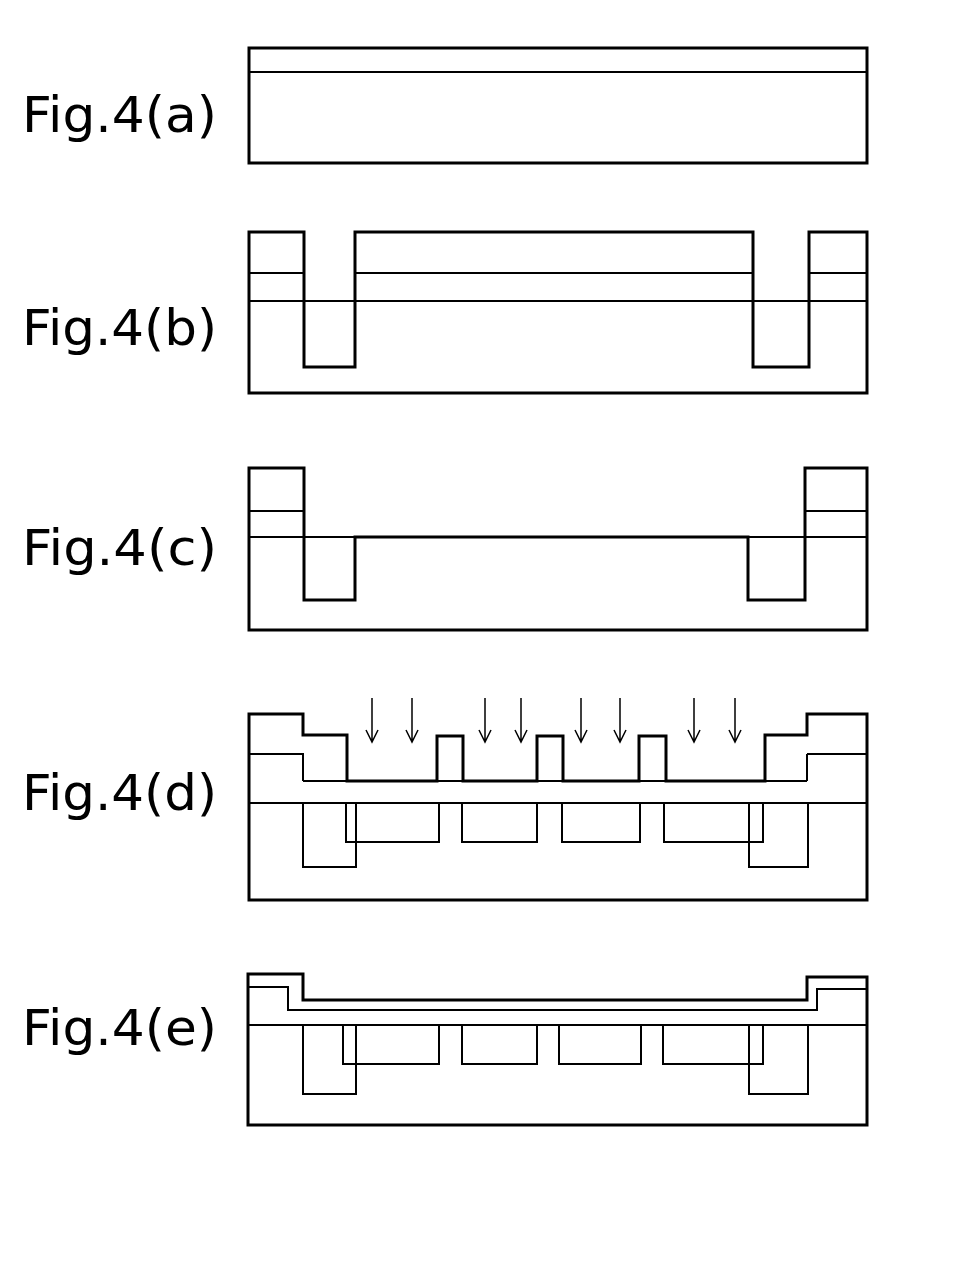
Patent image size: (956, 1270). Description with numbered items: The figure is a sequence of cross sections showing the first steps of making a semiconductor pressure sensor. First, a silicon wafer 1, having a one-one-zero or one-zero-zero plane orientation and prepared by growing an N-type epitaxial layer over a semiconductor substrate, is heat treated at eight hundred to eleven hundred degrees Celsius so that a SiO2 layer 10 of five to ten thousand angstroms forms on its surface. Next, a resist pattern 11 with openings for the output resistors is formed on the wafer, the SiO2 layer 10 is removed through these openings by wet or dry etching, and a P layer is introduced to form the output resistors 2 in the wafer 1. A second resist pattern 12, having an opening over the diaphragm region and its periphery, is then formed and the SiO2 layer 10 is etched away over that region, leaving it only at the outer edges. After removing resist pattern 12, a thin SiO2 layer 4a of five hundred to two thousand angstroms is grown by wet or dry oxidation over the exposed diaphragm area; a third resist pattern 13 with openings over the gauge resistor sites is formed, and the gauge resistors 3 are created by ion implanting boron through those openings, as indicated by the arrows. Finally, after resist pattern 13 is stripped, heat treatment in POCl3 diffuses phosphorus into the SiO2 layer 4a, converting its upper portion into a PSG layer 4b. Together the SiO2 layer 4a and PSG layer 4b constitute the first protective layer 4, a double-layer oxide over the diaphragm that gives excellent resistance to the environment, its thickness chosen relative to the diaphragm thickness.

In FIG. 4A, the silicon wafer 1 is at (760, 92).
In FIG. 4B, the silicon wafer 1 is at (541, 359).
In FIG. 4C, the silicon wafer 1 is at (555, 593).
In FIG. 4D, the silicon wafer 1 is at (555, 891).
In FIG. 4E, the silicon wafer 1 is at (555, 1111).
In FIG. 4B, the output resistors 2 is at (342, 330).
In FIG. 4C, the output resistors 2 is at (344, 571).
In FIG. 4D, the output resistors 2 is at (310, 850).
In FIG. 4E, the output resistors 2 is at (310, 1075).
In FIG. 4D, the gauge resistors 3 is at (401, 832).
In FIG. 4E, the gauge resistors 3 is at (392, 1055).
In FIG. 4E, the first protective layer 4 is at (593, 1004).
In FIG. 4D, the SiO2 layer 4a is at (692, 790).
In FIG. 4E, the SiO2 layer 4a is at (645, 1020).
In FIG. 4E, the PSG layer 4b is at (721, 1005).
In FIG. 4A, the SiO2 layer 10 is at (824, 53).
In FIG. 4B, the SiO2 layer 10 is at (292, 287).
In FIG. 4C, the SiO2 layer 10 is at (294, 522).
In FIG. 4D, the SiO2 layer 10 is at (838, 778).
In FIG. 4E, the SiO2 layer 10 is at (830, 1003).
In FIG. 4B, the resist pattern 11 is at (283, 245).
In FIG. 4C, the resist pattern 12 is at (277, 484).
In FIG. 4D, the resist pattern 13 is at (277, 727).